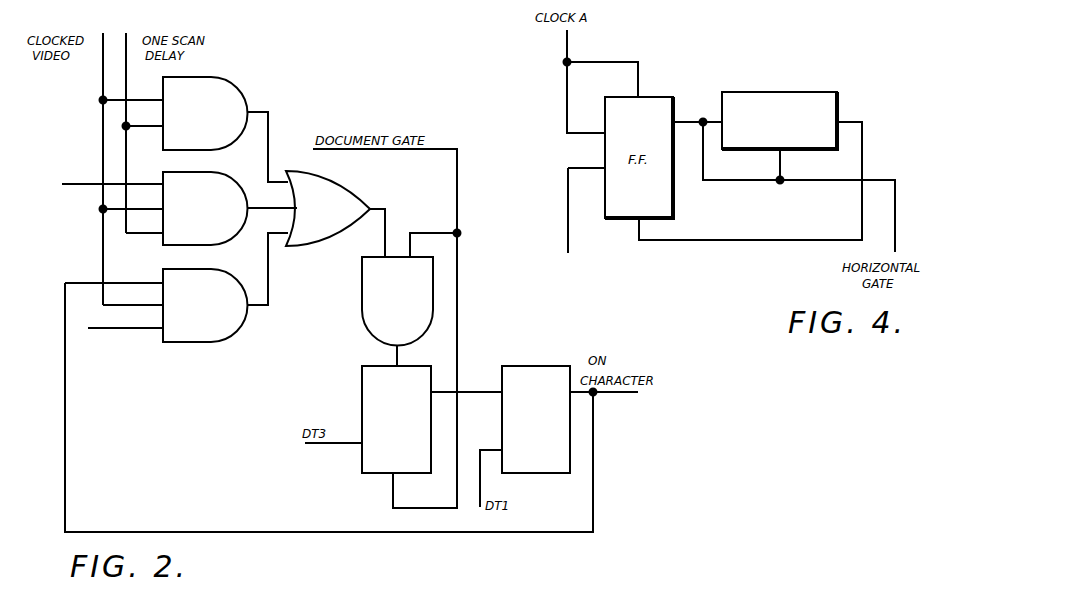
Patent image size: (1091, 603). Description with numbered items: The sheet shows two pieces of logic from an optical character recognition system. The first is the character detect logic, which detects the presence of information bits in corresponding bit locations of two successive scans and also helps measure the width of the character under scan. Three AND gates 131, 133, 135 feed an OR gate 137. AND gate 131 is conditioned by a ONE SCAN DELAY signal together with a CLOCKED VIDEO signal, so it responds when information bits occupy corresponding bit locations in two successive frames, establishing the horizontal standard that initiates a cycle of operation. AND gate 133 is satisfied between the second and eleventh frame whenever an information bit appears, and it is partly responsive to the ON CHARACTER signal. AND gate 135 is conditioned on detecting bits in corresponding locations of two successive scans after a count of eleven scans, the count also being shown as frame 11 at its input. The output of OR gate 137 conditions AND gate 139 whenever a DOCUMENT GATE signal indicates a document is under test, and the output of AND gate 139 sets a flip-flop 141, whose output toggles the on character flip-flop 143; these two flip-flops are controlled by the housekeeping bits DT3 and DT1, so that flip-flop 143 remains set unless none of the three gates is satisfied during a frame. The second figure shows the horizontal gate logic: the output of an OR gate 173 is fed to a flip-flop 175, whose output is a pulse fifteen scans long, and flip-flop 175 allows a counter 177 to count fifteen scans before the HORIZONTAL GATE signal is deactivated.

In FIG. 2, the frame 11 is at (93, 263).
In FIG. 2, the AND gate 131 is at (240, 82).
In FIG. 2, the AND gate 133 is at (218, 342).
In FIG. 2, the AND gate 135 is at (218, 245).
In FIG. 2, the OR gate 137 is at (328, 251).
In FIG. 2, the AND gate 139 is at (368, 325).
In FIG. 2, the flip-flop 141 is at (362, 466).
In FIG. 2, the on character flip-flop 143 is at (547, 473).
In FIG. 4, the OR gate 173 is at (589, 229).
In FIG. 4, the flip-flop 175 is at (675, 218).
In FIG. 4, the counter 177 is at (837, 92).